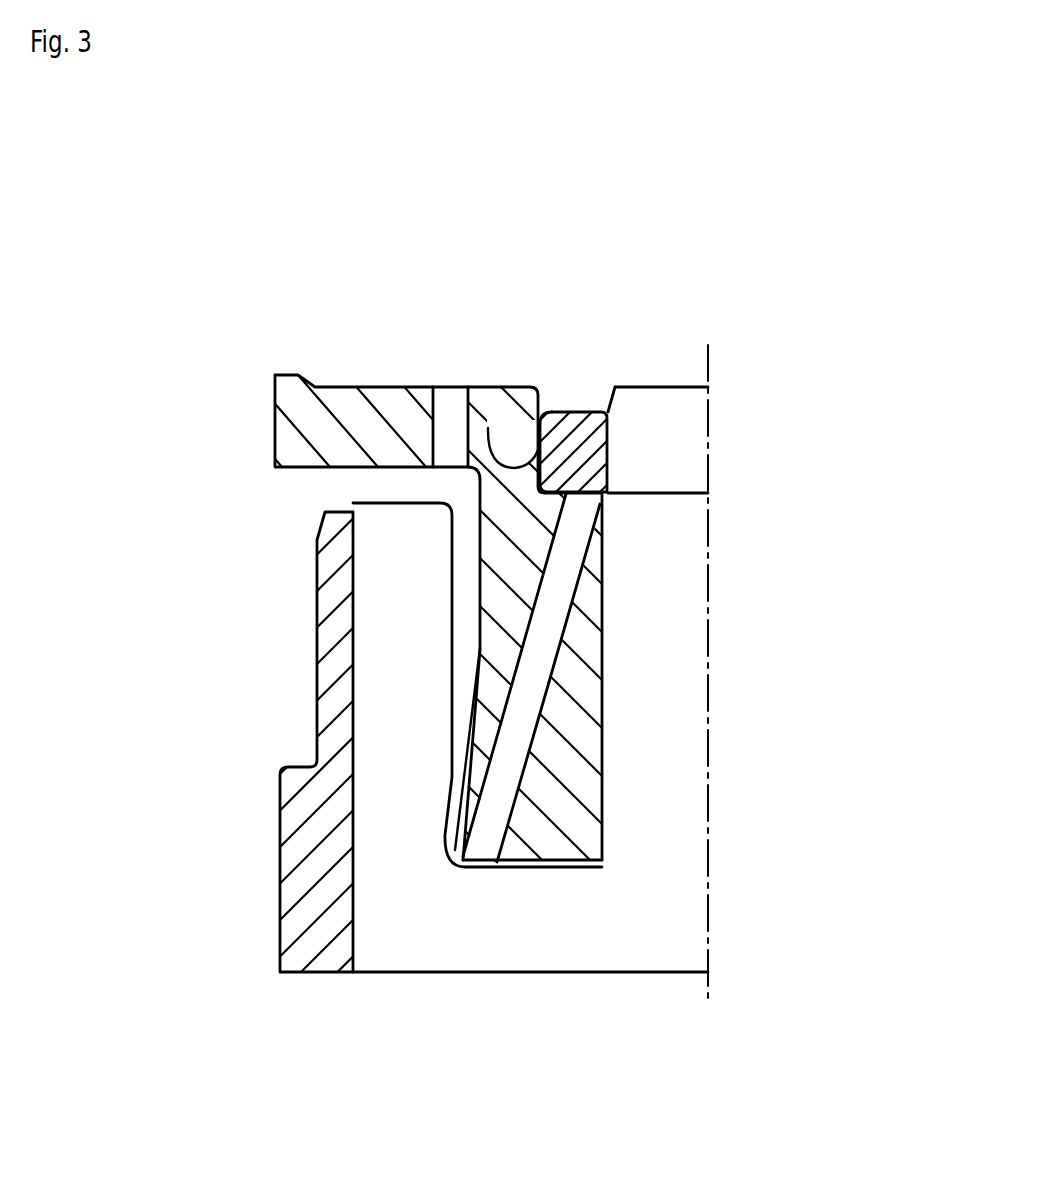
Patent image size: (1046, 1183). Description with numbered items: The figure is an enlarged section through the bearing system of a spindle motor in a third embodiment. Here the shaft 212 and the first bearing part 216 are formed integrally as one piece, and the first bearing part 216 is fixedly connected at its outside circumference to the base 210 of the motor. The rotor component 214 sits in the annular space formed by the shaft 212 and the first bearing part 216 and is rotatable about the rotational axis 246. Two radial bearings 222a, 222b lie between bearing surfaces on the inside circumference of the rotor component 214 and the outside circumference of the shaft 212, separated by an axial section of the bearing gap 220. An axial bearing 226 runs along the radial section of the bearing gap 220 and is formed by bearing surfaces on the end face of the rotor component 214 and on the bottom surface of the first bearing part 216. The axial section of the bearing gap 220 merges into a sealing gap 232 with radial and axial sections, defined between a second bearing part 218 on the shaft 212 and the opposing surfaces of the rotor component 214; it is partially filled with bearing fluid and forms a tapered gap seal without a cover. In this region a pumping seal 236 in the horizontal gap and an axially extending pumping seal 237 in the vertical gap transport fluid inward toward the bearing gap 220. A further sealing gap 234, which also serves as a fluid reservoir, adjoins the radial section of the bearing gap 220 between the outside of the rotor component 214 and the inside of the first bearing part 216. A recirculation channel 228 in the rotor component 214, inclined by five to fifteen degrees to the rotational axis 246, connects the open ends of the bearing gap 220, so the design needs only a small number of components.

The base 210 is at (313, 898).
The shaft 212 is at (667, 660).
The rotor component 214 is at (510, 567).
The first bearing part 216 is at (433, 933).
The second bearing part 218 is at (588, 452).
The bearing gap 220 is at (602, 832).
The radial bearing 222a is at (577, 613).
The radial bearing 222b is at (577, 768).
The axial bearing 226 is at (555, 867).
The recirculation channel 228 is at (543, 653).
The sealing gap 232 is at (543, 443).
The sealing gap 234 is at (462, 718).
The pumping seal 236 is at (606, 460).
The pumping seal 237 is at (488, 430).
The rotational axis 246 is at (708, 368).